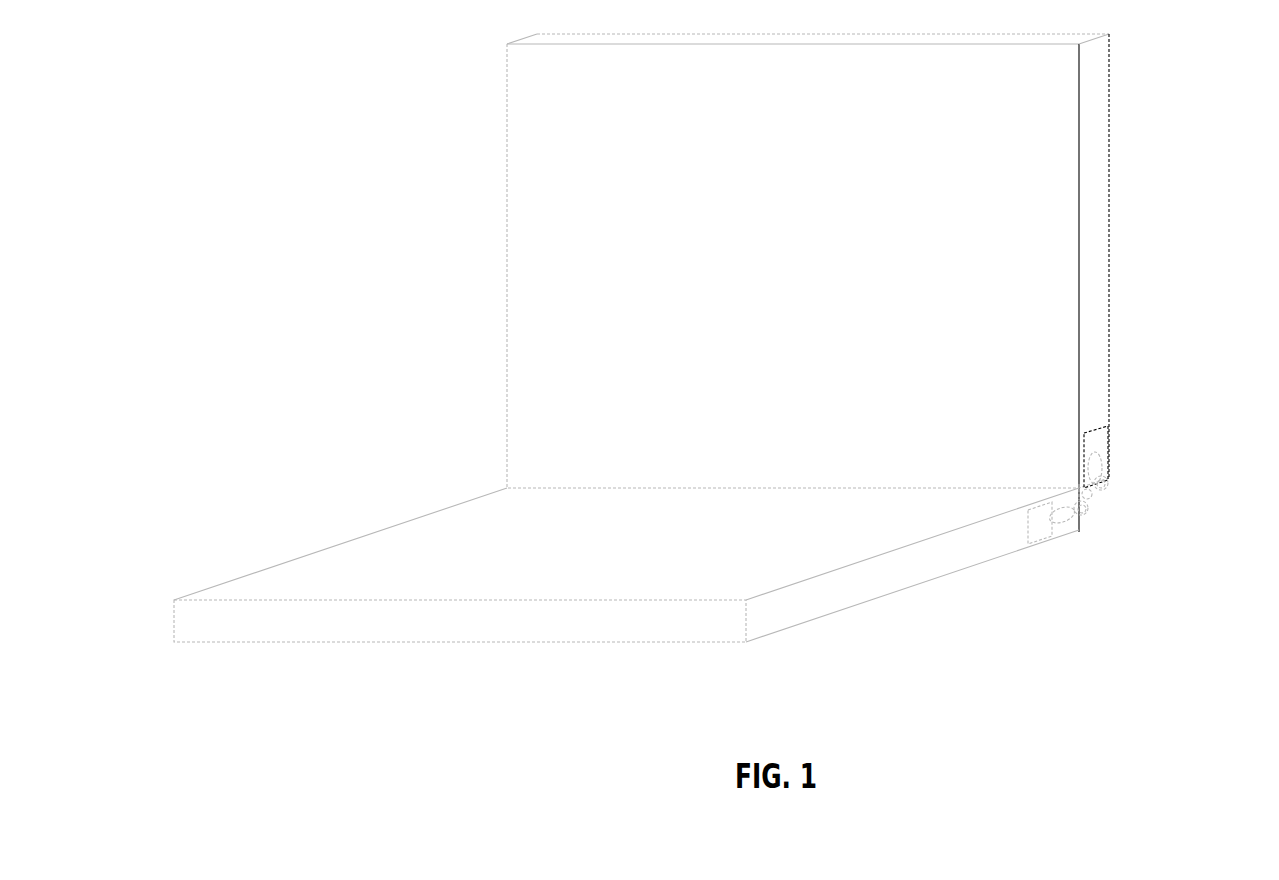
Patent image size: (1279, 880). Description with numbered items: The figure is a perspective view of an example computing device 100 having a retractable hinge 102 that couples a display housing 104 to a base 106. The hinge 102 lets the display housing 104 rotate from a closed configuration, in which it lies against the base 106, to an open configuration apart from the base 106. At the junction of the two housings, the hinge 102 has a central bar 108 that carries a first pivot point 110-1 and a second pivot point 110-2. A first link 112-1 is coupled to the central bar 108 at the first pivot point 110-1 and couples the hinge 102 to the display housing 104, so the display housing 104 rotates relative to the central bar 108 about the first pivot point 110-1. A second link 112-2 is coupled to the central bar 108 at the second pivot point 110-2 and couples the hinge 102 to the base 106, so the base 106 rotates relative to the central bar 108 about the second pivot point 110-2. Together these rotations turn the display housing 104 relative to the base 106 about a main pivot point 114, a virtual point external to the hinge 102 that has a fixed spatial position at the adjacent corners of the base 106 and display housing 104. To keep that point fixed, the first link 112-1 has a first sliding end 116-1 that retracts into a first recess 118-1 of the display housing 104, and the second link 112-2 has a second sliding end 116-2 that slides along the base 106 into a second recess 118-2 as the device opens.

The computing device 100 is at (356, 147).
The retractable hinge 102 is at (1146, 556).
The display housing 104 is at (1108, 120).
The base 106 is at (285, 642).
The central bar 108 is at (1103, 493).
The first pivot point 110-1 is at (1105, 480).
The second pivot point 110-2 is at (1087, 515).
The first link 112-1 is at (1100, 467).
The second link 112-2 is at (1078, 520).
The main pivot point 114 is at (1077, 488).
The first sliding end 116-1 is at (1100, 455).
The second sliding end 116-2 is at (1062, 524).
The first recess 118-1 is at (1091, 429).
The second recess 118-2 is at (1038, 541).